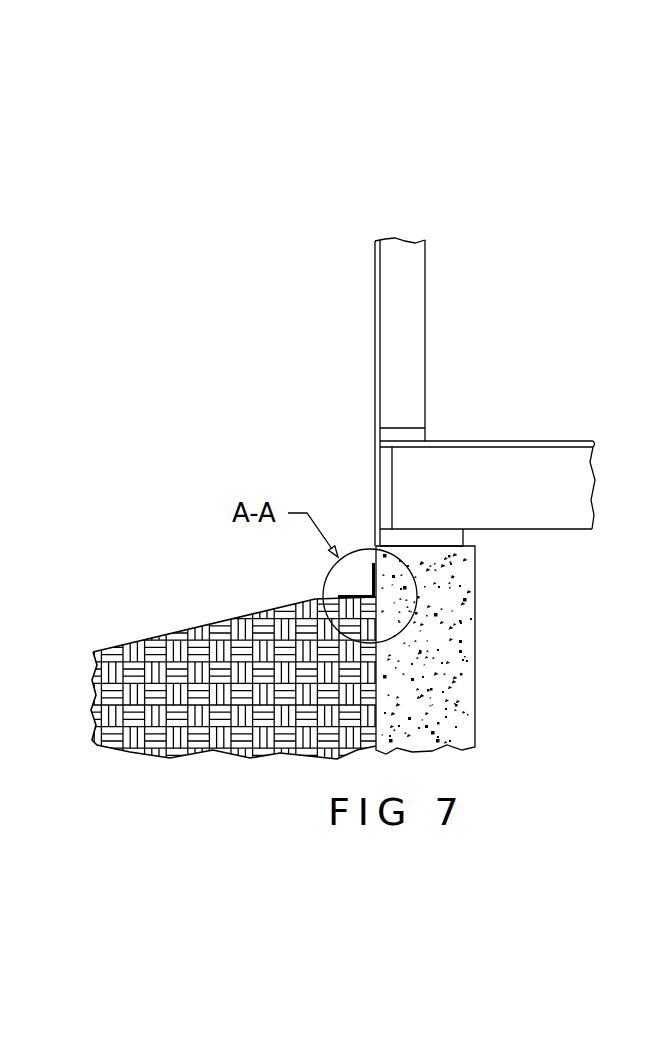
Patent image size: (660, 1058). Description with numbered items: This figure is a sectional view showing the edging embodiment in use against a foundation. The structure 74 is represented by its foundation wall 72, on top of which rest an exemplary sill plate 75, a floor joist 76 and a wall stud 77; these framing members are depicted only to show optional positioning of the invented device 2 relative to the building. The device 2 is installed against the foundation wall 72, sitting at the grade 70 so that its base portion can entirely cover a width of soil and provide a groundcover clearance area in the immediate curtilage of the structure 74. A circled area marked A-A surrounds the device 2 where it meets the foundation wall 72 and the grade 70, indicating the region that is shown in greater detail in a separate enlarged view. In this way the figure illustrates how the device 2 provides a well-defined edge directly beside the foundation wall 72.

The structure 74 is at (372, 275).
The wall stud 77 is at (433, 388).
The floor joist 76 is at (533, 533).
The sill plate 75 is at (468, 536).
The foundation wall 72 is at (480, 652).
The grade 70 is at (240, 602).
The device 2 is at (362, 582).